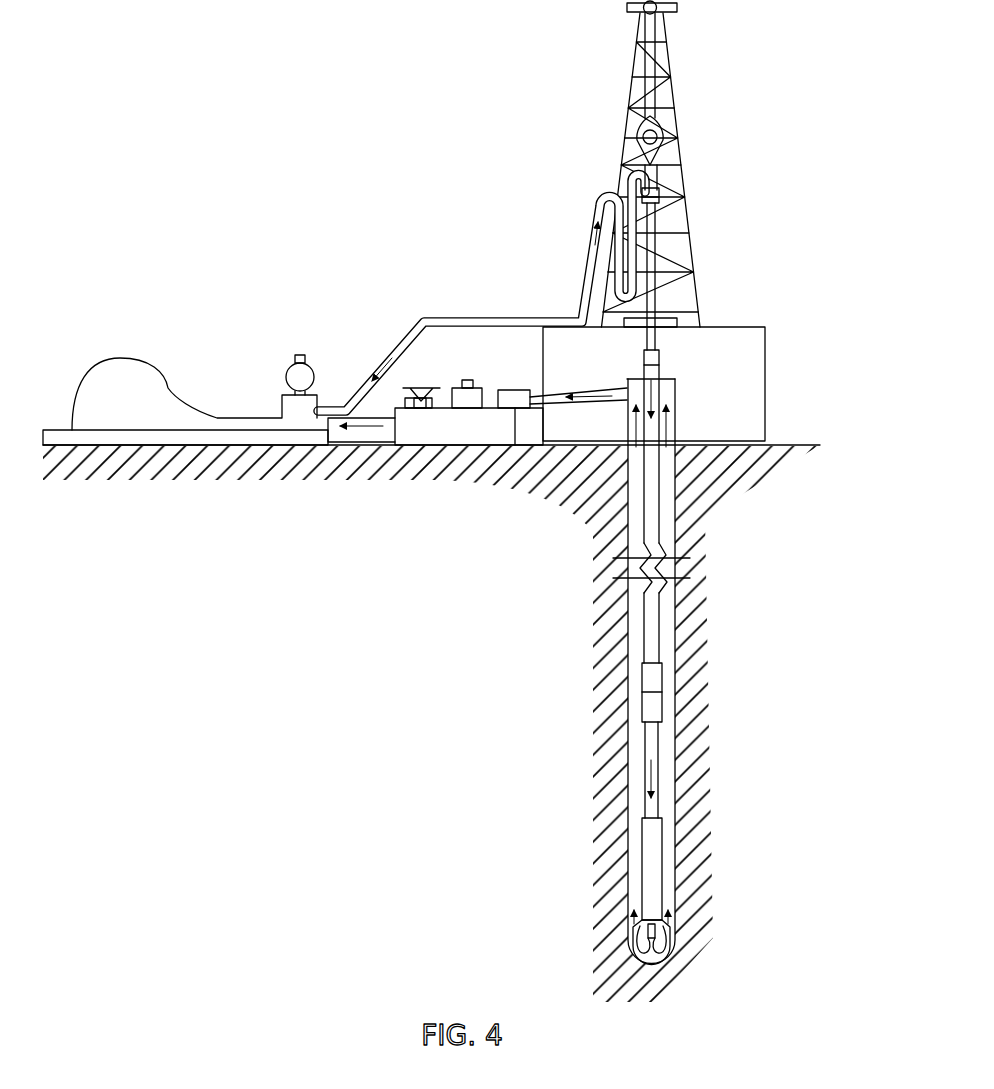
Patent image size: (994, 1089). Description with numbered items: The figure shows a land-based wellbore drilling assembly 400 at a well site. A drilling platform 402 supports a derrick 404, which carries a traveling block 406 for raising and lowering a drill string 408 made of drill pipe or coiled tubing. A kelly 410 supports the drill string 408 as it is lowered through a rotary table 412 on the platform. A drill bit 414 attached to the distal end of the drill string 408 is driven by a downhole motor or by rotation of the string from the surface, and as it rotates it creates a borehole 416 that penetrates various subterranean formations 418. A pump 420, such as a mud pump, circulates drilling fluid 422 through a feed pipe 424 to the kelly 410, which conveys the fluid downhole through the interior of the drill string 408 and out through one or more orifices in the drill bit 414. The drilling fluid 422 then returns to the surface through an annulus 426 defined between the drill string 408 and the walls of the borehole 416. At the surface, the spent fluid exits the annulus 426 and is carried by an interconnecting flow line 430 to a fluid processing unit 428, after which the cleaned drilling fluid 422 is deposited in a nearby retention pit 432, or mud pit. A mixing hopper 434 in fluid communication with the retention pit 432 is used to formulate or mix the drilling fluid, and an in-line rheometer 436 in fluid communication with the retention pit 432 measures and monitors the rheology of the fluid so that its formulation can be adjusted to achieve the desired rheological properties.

The wellbore drilling assembly 400 is at (390, 68).
The drilling platform 402 is at (765, 348).
The derrick 404 is at (678, 85).
The traveling block 406 is at (664, 125).
The drill string 408 is at (652, 518).
The kelly 410 is at (655, 240).
The rotary table 412 is at (668, 322).
The drill bit 414 is at (672, 932).
The borehole 416 is at (676, 628).
The subterranean formations 418 is at (493, 705).
The pump 420 is at (102, 414).
The drilling fluid 422 is at (345, 406).
The feed pipe 424 is at (430, 318).
The annulus 426 is at (666, 773).
The fluid processing unit 428 is at (512, 390).
The flow line 430 is at (612, 404).
The retention pit 432 is at (497, 437).
The mixing hopper 434 is at (415, 403).
The rheometer 436 is at (467, 380).